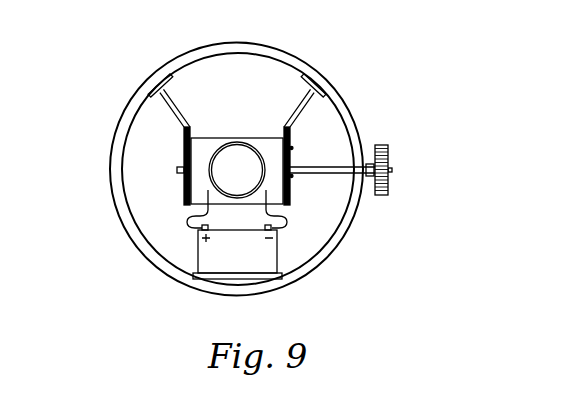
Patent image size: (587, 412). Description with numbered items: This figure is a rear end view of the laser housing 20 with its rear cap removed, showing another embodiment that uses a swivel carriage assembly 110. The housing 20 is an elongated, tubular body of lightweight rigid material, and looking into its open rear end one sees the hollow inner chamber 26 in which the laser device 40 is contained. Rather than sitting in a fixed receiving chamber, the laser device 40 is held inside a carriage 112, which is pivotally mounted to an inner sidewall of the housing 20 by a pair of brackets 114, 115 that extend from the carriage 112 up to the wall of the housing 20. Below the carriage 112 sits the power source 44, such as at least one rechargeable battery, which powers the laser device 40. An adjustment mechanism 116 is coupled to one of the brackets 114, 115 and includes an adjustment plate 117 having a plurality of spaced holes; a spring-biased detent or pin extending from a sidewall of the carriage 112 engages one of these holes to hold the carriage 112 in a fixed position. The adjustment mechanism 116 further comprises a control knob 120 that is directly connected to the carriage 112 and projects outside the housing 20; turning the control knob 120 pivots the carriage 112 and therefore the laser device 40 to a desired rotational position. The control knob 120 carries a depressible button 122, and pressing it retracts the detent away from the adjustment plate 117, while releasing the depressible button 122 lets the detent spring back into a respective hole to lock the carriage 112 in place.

The laser housing 20 is at (108, 161).
The hollow inner chamber 26 is at (153, 228).
The laser device 40 is at (223, 158).
The power source 44 is at (195, 252).
The swivel carriage assembly 110 is at (172, 193).
The carriage 112 is at (263, 140).
The bracket 114 is at (170, 112).
The bracket 115 is at (310, 108).
The adjustment mechanism 116 is at (328, 133).
The adjustment plate 117 is at (293, 190).
The control knob 120 is at (382, 197).
The depressible button 122 is at (393, 170).